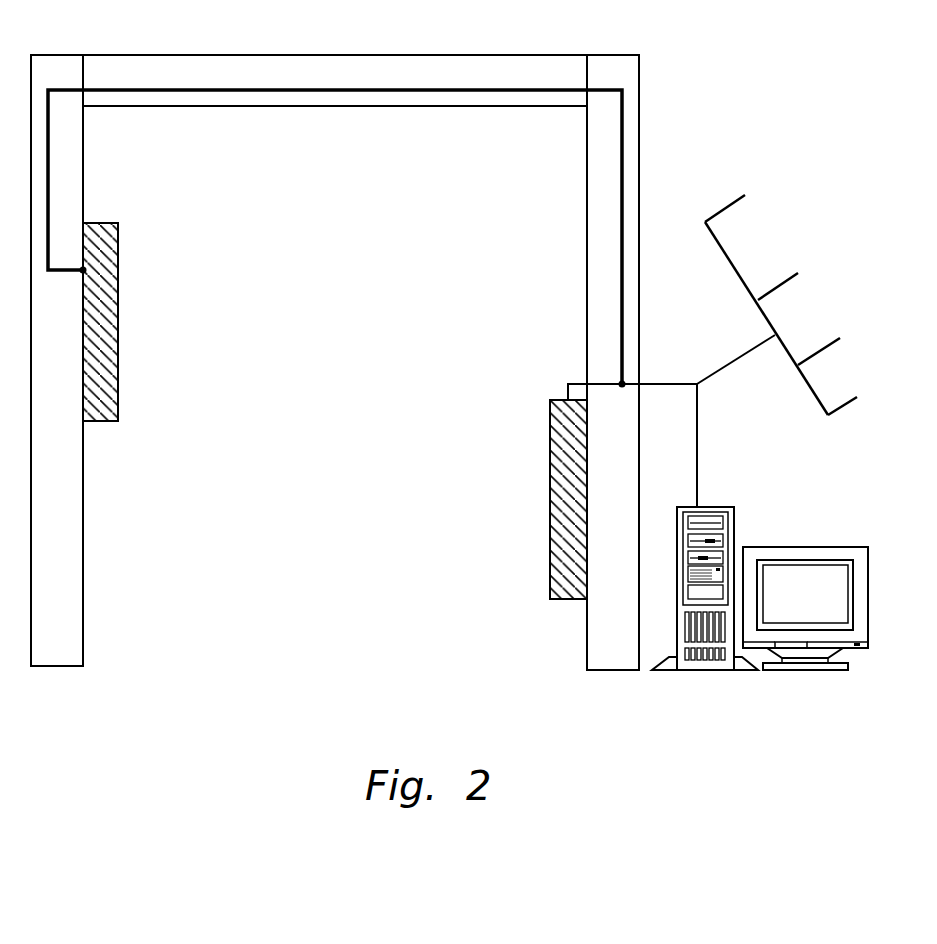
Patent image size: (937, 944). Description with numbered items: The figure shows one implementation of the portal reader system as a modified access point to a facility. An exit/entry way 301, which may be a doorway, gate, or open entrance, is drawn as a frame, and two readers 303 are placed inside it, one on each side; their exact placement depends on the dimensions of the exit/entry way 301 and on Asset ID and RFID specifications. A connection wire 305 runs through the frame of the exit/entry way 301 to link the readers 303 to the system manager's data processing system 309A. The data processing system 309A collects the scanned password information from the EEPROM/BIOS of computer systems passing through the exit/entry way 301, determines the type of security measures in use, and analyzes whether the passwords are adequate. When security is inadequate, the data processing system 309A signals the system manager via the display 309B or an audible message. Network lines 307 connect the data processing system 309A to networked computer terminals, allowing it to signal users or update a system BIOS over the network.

The exit/entry way 301 is at (57, 55).
The reader 303 is at (97, 223).
The connection wire 305 is at (378, 90).
The network lines 307 is at (720, 212).
The data processing system 309A is at (725, 507).
The display 309B is at (843, 547).